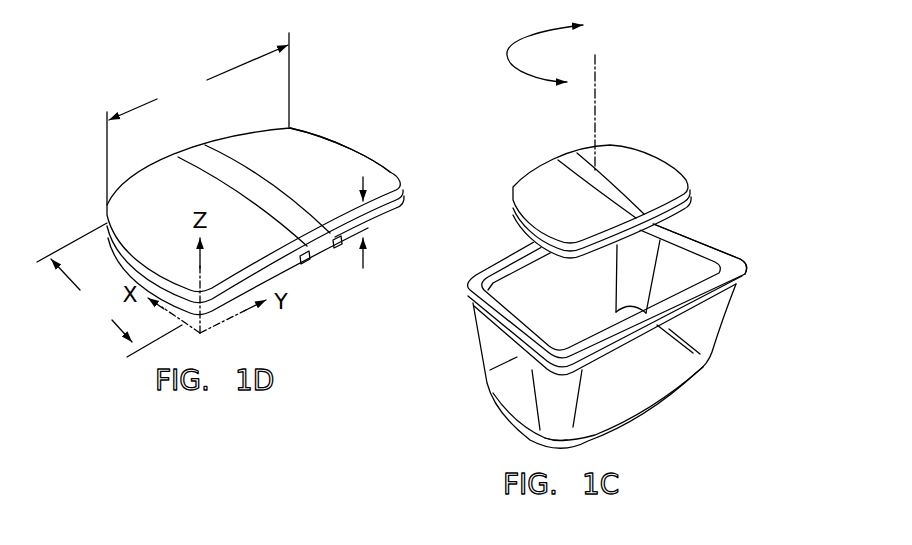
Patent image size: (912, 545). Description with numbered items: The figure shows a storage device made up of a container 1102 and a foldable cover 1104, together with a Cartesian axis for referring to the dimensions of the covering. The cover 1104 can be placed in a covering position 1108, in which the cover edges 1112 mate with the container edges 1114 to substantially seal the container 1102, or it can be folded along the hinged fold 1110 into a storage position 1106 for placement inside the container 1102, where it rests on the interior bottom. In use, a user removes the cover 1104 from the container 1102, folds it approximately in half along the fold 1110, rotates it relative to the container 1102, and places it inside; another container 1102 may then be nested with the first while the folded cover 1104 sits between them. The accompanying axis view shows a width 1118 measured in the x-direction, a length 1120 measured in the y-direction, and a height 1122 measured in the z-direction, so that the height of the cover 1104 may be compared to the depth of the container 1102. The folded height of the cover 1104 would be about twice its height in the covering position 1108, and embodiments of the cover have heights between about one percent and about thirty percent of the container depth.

In FIG. 1C, the container 1102 is at (480, 350).
In FIG. 1D, the cover 1104 is at (368, 156).
In FIG. 1C, the cover 1104 is at (657, 156).
In FIG. 1C, the storage position 1106 is at (537, 174).
In FIG. 1D, the covering position 1108 is at (303, 152).
In FIG. 1D, the fold 1110 is at (234, 166).
In FIG. 1C, the fold 1110 is at (655, 173).
In FIG. 1C, the cover edges 1112 is at (627, 157).
In FIG. 1C, the container edges 1114 is at (723, 257).
In FIG. 1D, the width 1118 is at (350, 240).
In FIG. 1D, the length 1120 is at (198, 119).
In FIG. 1D, the height 1122 is at (367, 223).